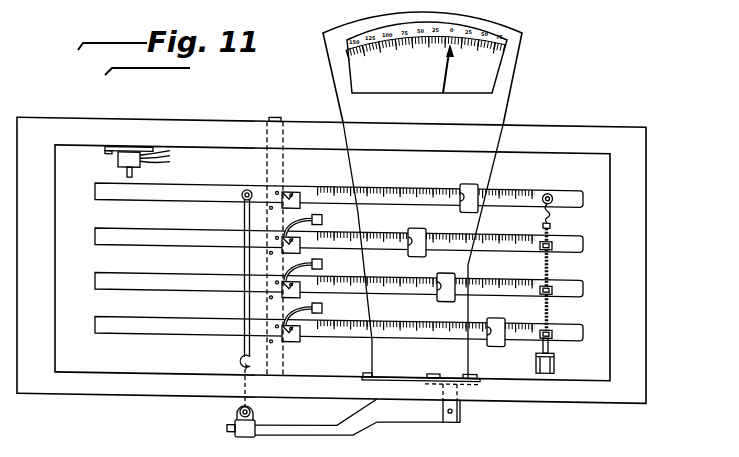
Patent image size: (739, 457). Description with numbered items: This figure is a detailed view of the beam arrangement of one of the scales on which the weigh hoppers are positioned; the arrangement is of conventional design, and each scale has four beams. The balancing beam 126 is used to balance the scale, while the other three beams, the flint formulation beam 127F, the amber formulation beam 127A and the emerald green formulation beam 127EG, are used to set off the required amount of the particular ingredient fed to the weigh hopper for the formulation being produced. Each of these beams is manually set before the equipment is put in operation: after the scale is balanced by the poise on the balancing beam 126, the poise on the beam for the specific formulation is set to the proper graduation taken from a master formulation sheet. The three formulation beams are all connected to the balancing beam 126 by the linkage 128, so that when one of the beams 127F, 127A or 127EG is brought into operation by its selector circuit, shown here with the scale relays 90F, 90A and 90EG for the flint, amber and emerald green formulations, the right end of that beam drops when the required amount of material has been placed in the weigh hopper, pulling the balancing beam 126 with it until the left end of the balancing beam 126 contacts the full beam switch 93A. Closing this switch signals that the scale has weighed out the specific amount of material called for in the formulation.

The full beam switch 93A is at (118, 157).
The balancing beam 126 is at (180, 189).
The flint formulation beam 127F is at (163, 236).
The amber formulation beam 127A is at (157, 280).
The emerald green formulation beam 127EG is at (143, 326).
The scale relay for flint formulation 90F is at (322, 214).
The scale relay for amber formulation 90A is at (322, 259).
The scale relay for emerald green formulation 90EG is at (322, 303).
The linkage 128 is at (550, 256).